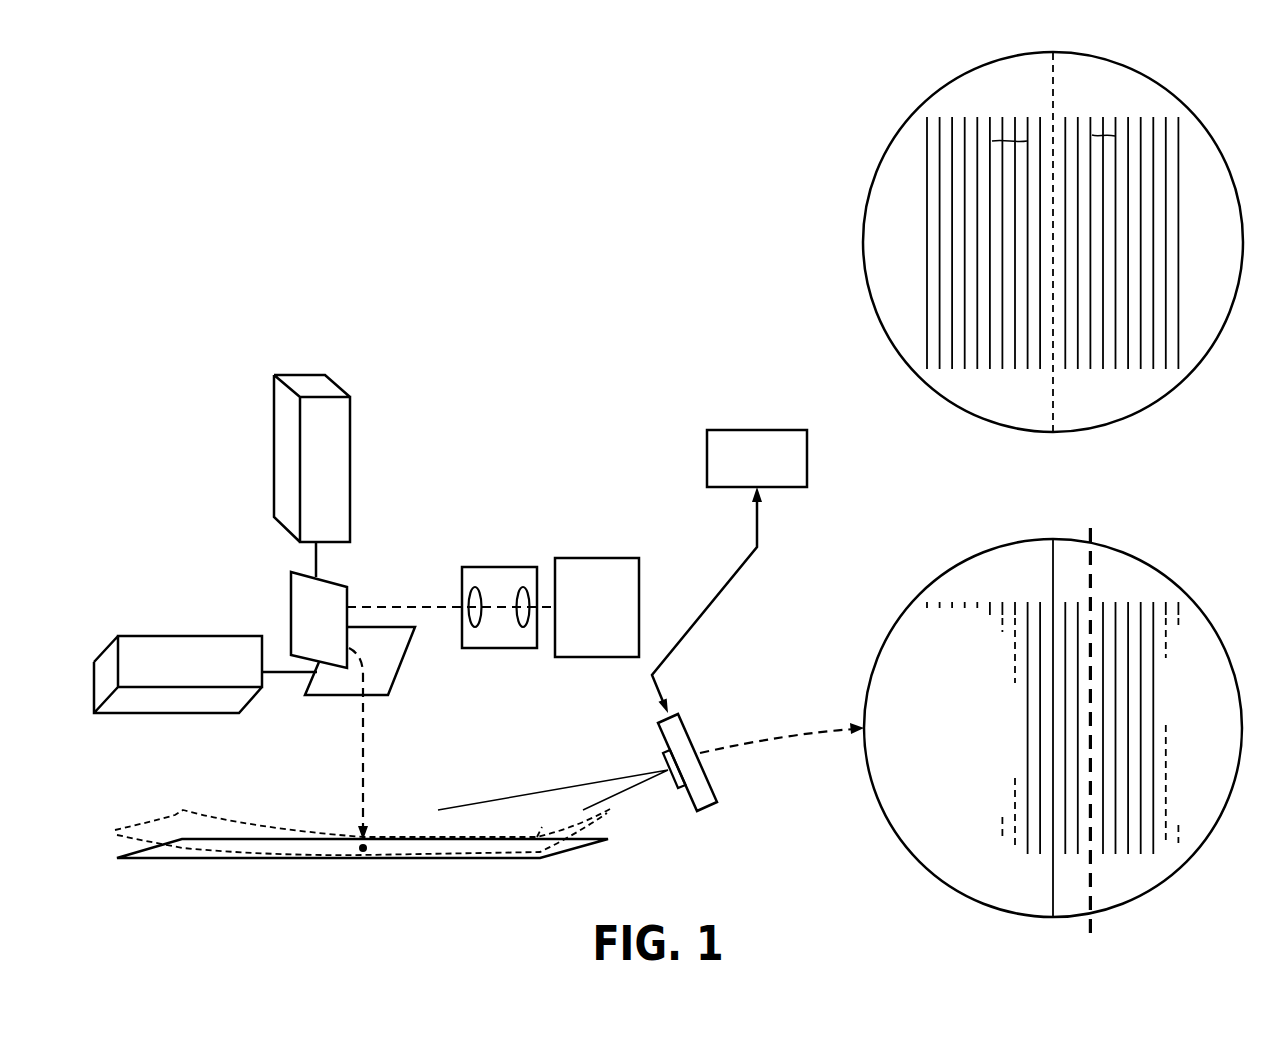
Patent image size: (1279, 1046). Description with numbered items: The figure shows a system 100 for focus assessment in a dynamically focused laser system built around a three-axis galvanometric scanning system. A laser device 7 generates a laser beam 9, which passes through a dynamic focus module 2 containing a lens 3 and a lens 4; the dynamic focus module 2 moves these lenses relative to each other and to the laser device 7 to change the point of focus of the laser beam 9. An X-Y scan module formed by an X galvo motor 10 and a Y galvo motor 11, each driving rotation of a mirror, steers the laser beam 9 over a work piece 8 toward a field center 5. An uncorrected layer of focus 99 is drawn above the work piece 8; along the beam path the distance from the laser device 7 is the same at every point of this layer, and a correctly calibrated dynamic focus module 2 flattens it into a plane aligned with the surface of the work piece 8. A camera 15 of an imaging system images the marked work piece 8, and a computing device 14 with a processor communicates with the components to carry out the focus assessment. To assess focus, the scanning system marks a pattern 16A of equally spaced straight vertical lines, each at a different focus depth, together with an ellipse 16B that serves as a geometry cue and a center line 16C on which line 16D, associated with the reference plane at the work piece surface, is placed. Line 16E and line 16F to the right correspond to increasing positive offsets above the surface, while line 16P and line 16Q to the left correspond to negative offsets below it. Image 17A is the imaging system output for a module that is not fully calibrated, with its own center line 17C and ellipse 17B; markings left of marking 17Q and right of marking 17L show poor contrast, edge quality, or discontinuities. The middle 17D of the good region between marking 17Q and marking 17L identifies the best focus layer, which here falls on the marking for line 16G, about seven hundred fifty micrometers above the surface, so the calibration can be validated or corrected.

The system 100 is at (476, 113).
The X galvo motor 10 is at (353, 470).
The Y galvo motor 11 is at (190, 634).
The laser beam 9 is at (408, 605).
The dynamic focus module 2 is at (498, 566).
The lens 3 is at (475, 628).
The lens 4 is at (523, 628).
The laser device 7 is at (585, 621).
The computing device 14 is at (770, 471).
The camera 15 is at (687, 800).
The work piece 8 is at (517, 859).
The field center 5 is at (363, 858).
The uncorrected layer of focus 99 is at (153, 825).
The pattern 16A is at (970, 390).
The ellipse 16B is at (863, 243).
The center line 16C is at (1052, 405).
The line 16D is at (1040, 127).
The line 16E is at (1067, 127).
The line 16F is at (1078, 130).
The line 16G is at (1115, 136).
The line 16P is at (1033, 132).
The line 16Q is at (992, 141).
The image 17A is at (1168, 546).
The ellipse 17B is at (940, 575).
The center line 17C is at (1053, 563).
The middle 17D is at (1091, 922).
The marking 17L is at (1153, 703).
The marking 17Q is at (1027, 728).